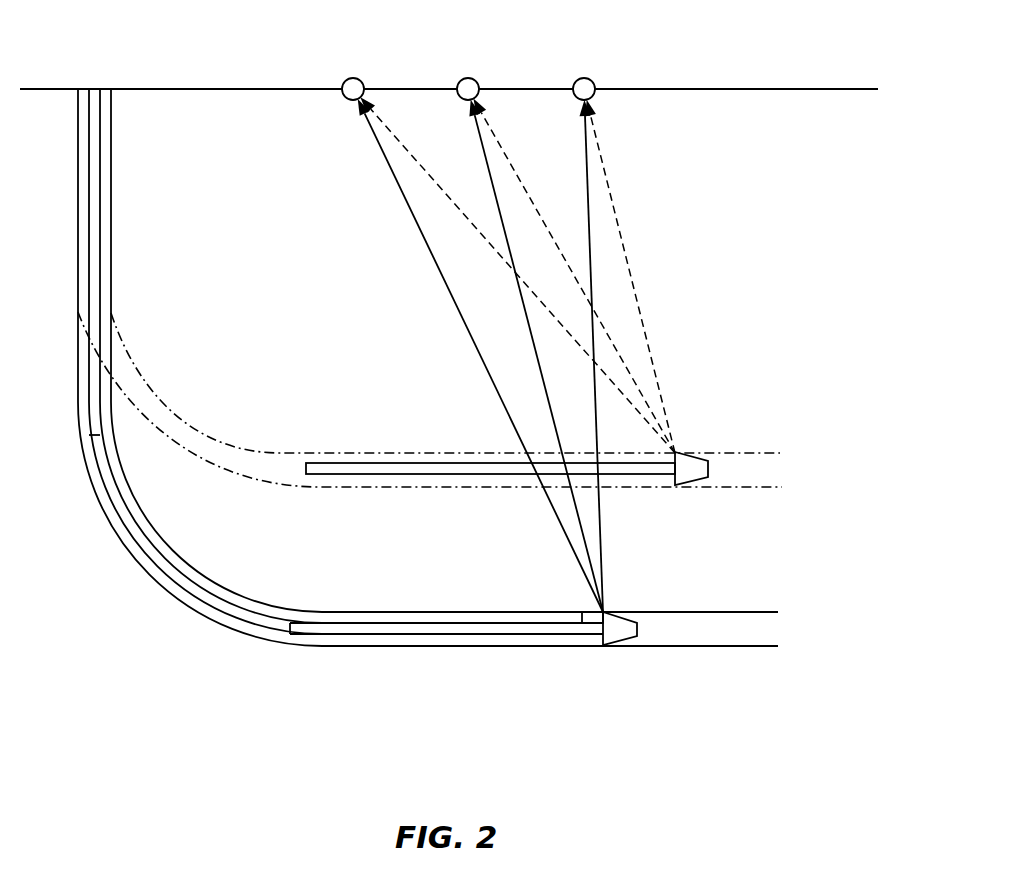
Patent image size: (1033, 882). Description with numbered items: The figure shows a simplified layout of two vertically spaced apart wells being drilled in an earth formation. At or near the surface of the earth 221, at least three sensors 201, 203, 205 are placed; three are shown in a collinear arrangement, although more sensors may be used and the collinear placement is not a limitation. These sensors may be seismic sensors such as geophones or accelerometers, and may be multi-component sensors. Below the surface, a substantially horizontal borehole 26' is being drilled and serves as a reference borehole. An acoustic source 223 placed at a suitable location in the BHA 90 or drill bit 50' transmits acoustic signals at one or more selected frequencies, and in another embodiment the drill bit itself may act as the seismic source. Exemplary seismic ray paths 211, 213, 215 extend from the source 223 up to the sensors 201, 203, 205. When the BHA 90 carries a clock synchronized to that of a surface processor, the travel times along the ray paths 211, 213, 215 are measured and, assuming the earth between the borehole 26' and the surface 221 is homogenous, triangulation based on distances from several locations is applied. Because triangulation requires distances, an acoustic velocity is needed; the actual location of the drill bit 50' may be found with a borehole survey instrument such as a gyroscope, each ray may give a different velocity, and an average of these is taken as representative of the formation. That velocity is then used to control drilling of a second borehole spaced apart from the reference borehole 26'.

The surface of the earth 221 is at (181, 87).
The sensor 201 is at (350, 78).
The sensor 203 is at (466, 78).
The sensor 205 is at (582, 78).
The seismic ray path 211 is at (450, 299).
The seismic ray path 213 is at (545, 392).
The seismic ray path 215 is at (592, 280).
The acoustic source 223 is at (600, 612).
The BHA 90 is at (468, 647).
The drill bit 50' is at (463, 647).
The borehole 26' is at (428, 542).